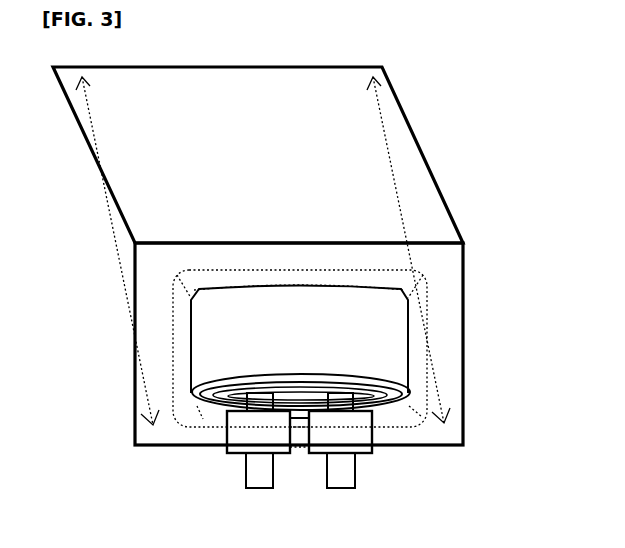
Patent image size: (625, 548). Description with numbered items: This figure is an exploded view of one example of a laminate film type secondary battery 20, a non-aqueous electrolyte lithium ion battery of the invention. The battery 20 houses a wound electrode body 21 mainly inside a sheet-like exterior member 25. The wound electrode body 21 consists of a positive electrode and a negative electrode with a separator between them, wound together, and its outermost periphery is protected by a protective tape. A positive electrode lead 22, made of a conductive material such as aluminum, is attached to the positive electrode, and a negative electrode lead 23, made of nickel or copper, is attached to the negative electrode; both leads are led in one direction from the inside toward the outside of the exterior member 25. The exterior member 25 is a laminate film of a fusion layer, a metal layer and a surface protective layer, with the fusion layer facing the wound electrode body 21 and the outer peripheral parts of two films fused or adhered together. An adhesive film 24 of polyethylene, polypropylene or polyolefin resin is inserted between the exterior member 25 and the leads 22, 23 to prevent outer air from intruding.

The laminate film type secondary battery 20 is at (304, 283).
The exterior member 25 is at (315, 160).
The wound electrode body 21 is at (372, 335).
The adhesive film 24 is at (362, 435).
The positive electrode lead 22 is at (255, 477).
The negative electrode lead 23 is at (342, 477).